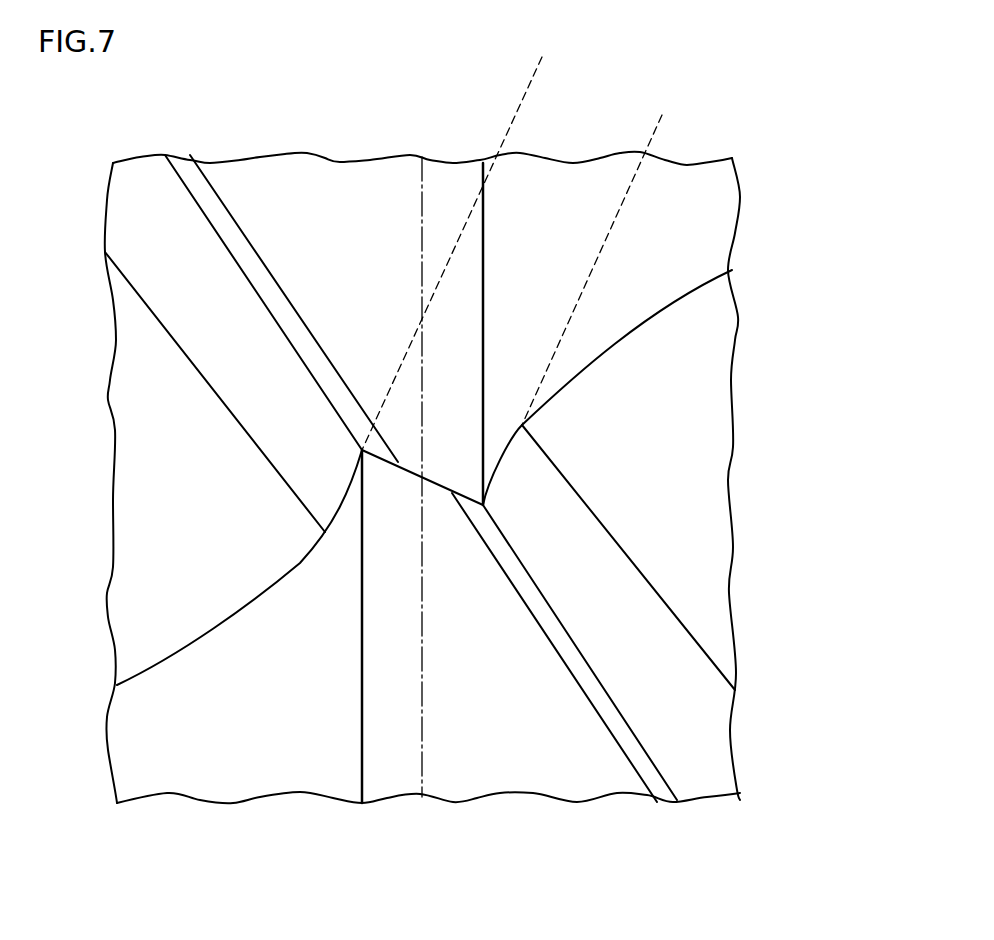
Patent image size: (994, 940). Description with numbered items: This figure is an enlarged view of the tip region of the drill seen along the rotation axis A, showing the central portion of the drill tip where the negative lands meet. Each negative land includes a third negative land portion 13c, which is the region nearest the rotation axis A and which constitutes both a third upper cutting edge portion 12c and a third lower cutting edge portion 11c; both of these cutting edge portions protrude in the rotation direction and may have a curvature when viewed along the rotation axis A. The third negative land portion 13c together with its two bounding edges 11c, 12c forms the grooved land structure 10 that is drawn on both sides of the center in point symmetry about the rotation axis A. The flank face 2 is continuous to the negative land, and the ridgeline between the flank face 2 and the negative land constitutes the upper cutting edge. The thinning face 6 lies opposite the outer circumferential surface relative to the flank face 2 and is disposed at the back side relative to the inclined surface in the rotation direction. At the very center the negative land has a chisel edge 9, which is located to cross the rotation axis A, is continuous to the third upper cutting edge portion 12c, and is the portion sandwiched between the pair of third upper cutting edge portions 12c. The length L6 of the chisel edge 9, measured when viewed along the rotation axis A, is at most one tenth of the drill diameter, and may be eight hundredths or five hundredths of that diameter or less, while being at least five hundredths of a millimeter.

The flank face 2 is at (372, 250).
The thinning face 6 is at (157, 410).
The chisel edge 9 is at (385, 463).
The inclined groove 10 is at (421, 480).
The third lower cutting edge portion 11c is at (293, 352).
The third upper cutting edge portion 12c is at (320, 343).
The third negative land portion 13c is at (258, 277).
The rotation axis A is at (422, 482).
The length of chisel edge L6 is at (535, 75).